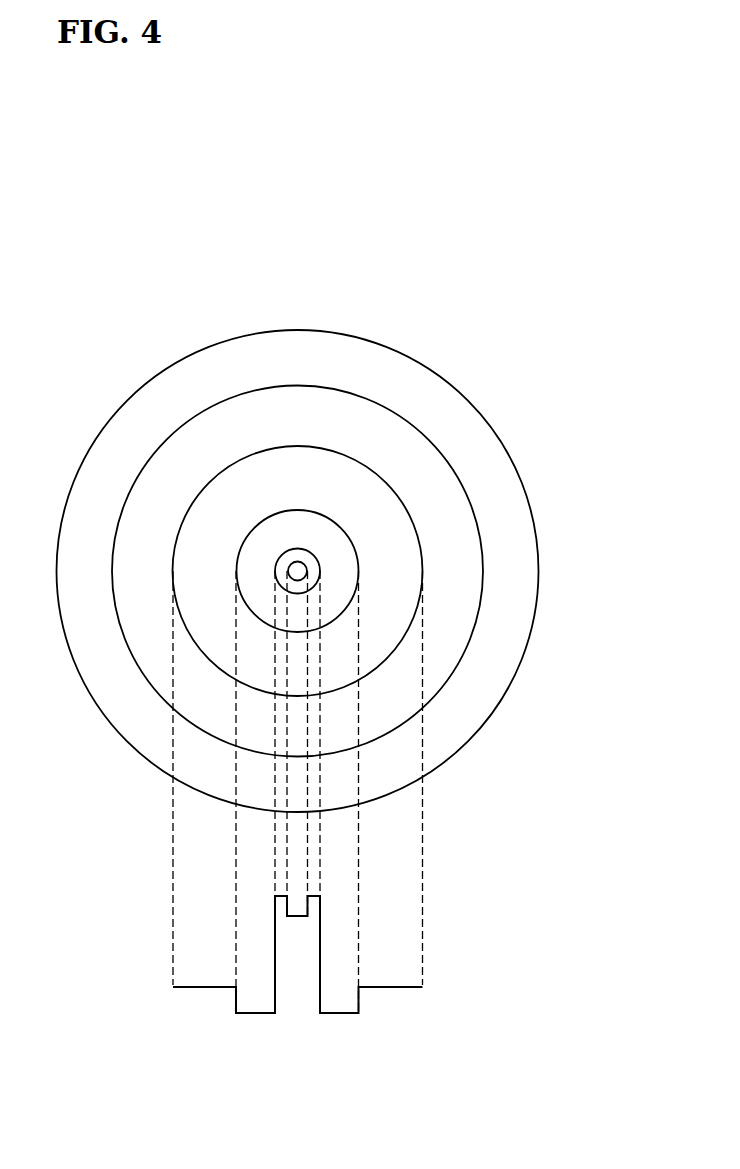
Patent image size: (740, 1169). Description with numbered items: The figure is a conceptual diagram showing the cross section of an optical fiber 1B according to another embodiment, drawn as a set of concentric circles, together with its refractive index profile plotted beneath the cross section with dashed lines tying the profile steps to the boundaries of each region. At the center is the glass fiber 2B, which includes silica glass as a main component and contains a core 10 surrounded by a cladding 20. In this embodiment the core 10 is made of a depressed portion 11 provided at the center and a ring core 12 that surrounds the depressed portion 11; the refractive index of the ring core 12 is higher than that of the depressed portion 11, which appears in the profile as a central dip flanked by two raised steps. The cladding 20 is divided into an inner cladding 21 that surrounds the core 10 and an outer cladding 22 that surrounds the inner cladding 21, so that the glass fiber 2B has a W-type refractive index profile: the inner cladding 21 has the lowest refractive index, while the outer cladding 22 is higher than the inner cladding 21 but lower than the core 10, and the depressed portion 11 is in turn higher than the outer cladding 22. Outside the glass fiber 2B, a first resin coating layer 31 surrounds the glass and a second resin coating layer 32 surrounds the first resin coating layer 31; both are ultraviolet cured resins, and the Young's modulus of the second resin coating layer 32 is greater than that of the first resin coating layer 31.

The optical fiber 1B is at (505, 359).
The glass fiber 2B is at (624, 488).
The core 10 is at (585, 472).
The depressed portion 11 is at (293, 571).
The ring core 12 is at (312, 558).
The cladding 20 is at (585, 538).
The inner cladding 21 is at (350, 559).
The outer cladding 22 is at (410, 577).
The first resin coating layer 31 is at (462, 635).
The second resin coating layer 32 is at (495, 685).